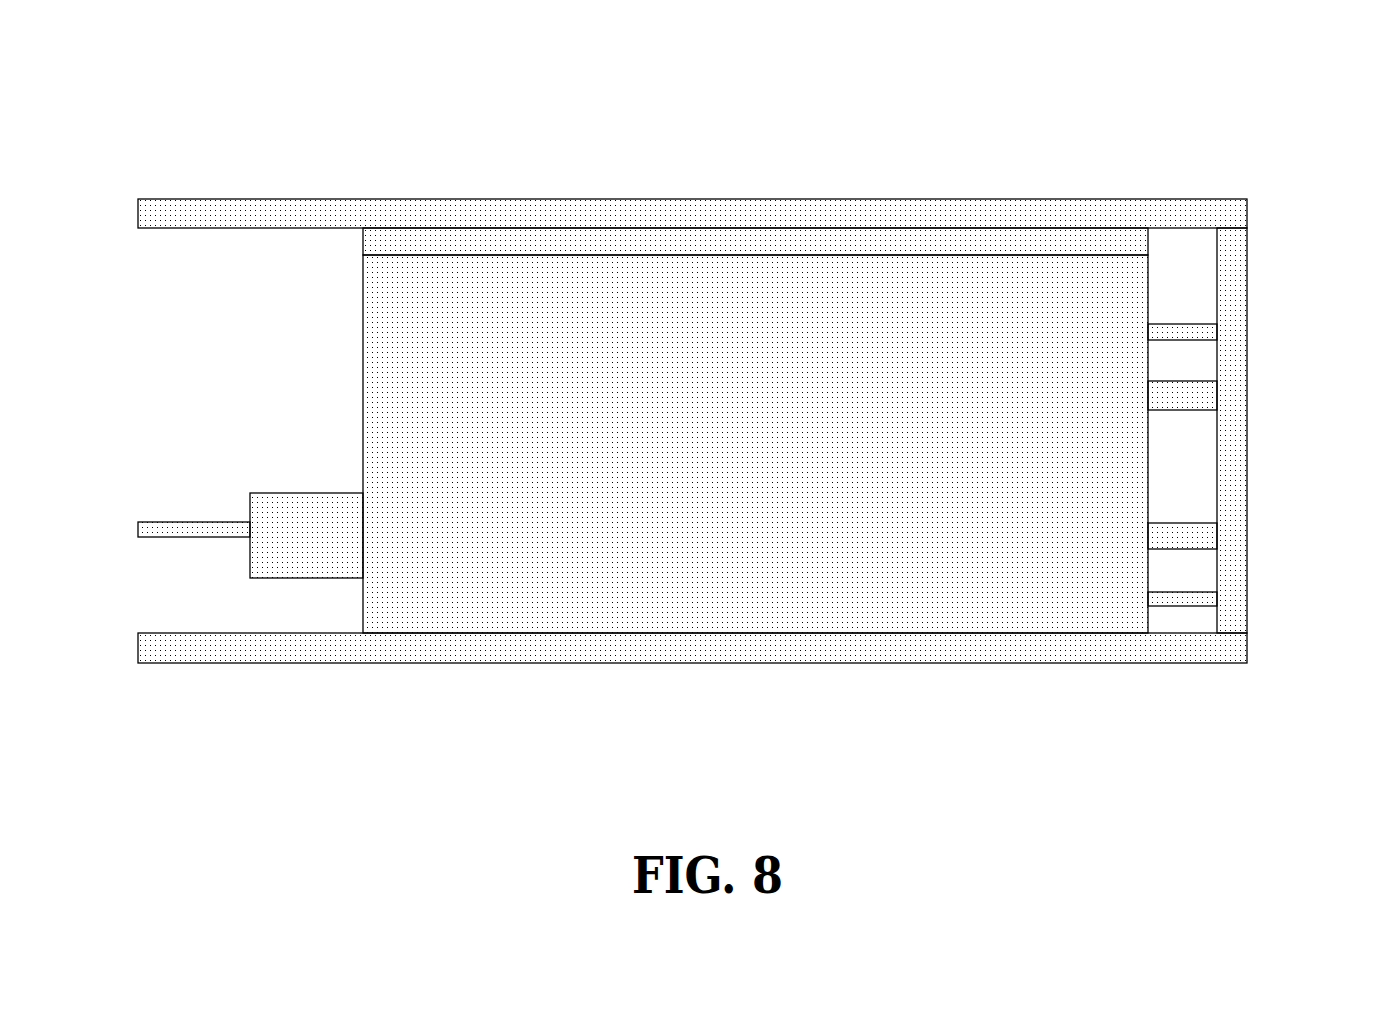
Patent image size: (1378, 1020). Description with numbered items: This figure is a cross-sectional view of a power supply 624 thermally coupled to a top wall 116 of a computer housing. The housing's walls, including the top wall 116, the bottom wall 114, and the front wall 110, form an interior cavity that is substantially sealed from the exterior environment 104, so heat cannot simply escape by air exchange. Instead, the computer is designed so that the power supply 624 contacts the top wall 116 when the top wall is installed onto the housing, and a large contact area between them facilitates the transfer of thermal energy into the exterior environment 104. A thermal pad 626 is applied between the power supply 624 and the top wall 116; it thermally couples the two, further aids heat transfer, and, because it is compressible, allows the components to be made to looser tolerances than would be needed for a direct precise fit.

The exterior environment 104 is at (747, 380).
The top wall 116 is at (628, 213).
The bottom wall 114 is at (798, 648).
The front wall 110 is at (1232, 450).
The thermal pad 626 is at (770, 242).
The power supply 624 is at (910, 338).